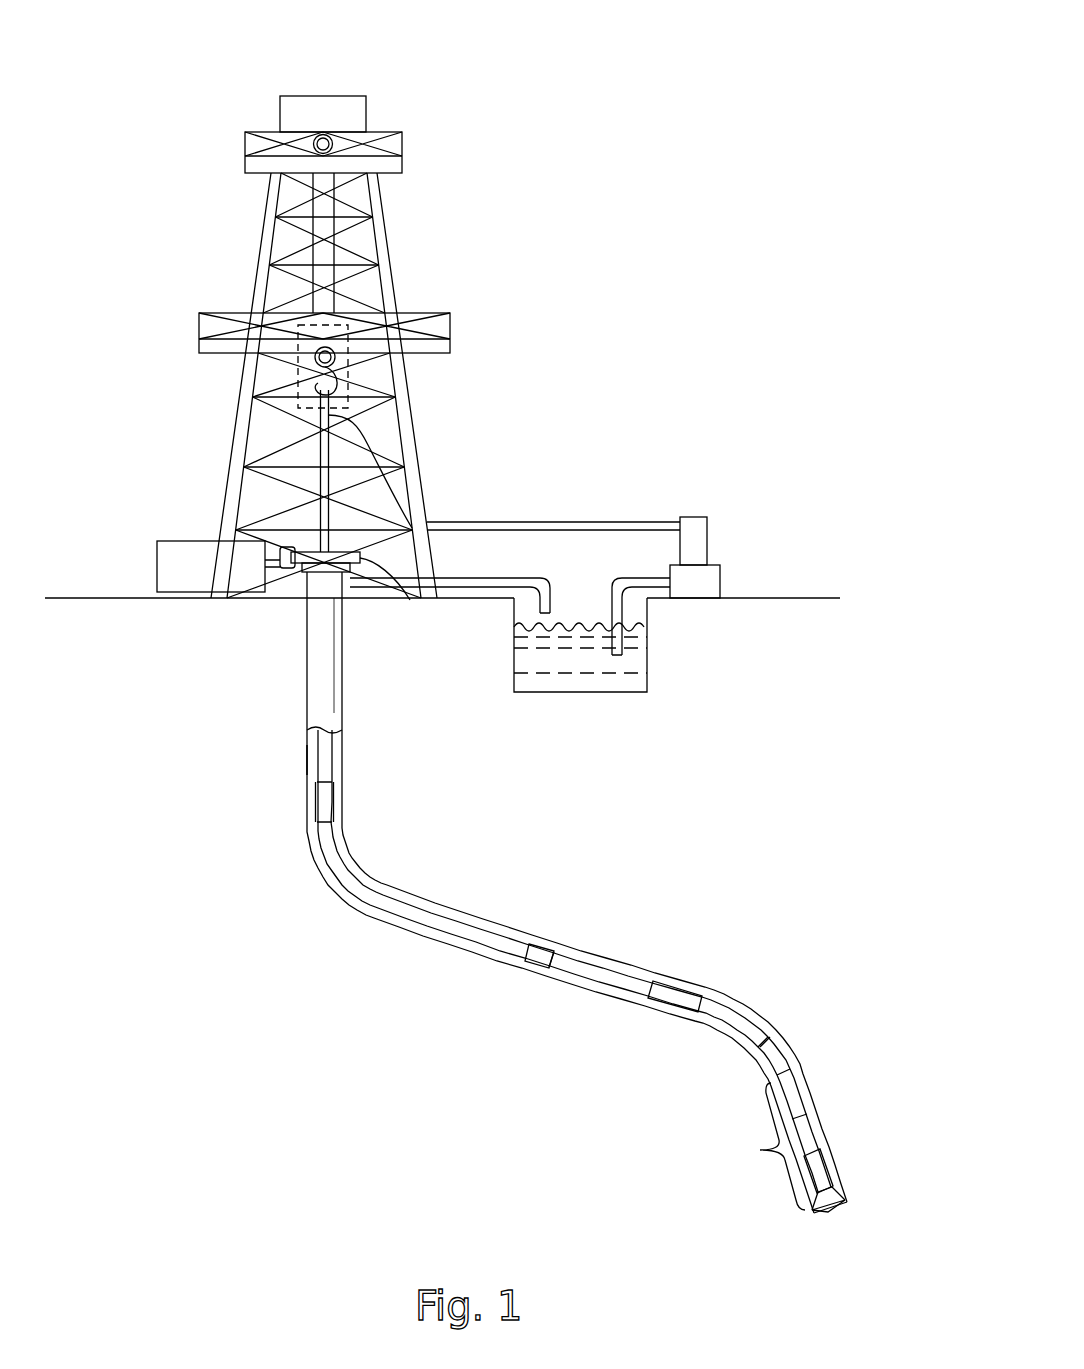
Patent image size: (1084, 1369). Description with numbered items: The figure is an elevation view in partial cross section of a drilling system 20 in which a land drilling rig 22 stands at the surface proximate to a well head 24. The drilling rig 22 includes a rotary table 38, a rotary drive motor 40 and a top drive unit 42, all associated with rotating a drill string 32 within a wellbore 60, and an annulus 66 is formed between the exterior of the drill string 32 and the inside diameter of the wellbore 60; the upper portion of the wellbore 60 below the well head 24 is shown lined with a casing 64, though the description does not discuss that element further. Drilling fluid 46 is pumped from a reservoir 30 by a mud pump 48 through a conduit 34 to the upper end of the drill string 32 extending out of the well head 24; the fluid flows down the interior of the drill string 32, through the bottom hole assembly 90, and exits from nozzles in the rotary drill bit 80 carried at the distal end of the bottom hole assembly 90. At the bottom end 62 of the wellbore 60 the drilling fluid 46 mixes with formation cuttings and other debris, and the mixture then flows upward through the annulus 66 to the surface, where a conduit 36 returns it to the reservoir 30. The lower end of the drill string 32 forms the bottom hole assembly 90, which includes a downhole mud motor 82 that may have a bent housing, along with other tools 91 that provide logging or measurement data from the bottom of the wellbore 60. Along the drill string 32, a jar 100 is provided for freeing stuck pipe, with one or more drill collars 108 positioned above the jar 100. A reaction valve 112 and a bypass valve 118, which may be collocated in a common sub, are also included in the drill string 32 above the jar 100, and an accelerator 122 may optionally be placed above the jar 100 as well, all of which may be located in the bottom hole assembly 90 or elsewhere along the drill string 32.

The drilling system 20 is at (187, 57).
The drilling rig 22 is at (258, 258).
The well head 24 is at (290, 578).
The reservoir 30 is at (540, 695).
The drill string 32 is at (358, 906).
The conduit 34 is at (637, 522).
The conduit 36 is at (543, 578).
The rotary table 38 is at (408, 603).
The rotary drive motor 40 is at (157, 568).
The top drive unit 42 is at (277, 369).
The drilling fluid 46 is at (620, 680).
The mud pump 48 is at (712, 540).
The wellbore 60 is at (420, 892).
The bottom end of wellbore 62 is at (810, 1213).
The casing 64 is at (303, 715).
The annulus 66 is at (312, 760).
The rotary drill bit 80 is at (838, 1200).
The downhole mud motor 82 is at (830, 1162).
The bottom hole assembly 90 is at (768, 1146).
The tools 91 is at (812, 1125).
The jar 100 is at (550, 968).
The drill collar 108 is at (790, 1036).
The reaction valve 112 is at (681, 1003).
The bypass valve 118 is at (520, 960).
The accelerator 122 is at (333, 797).